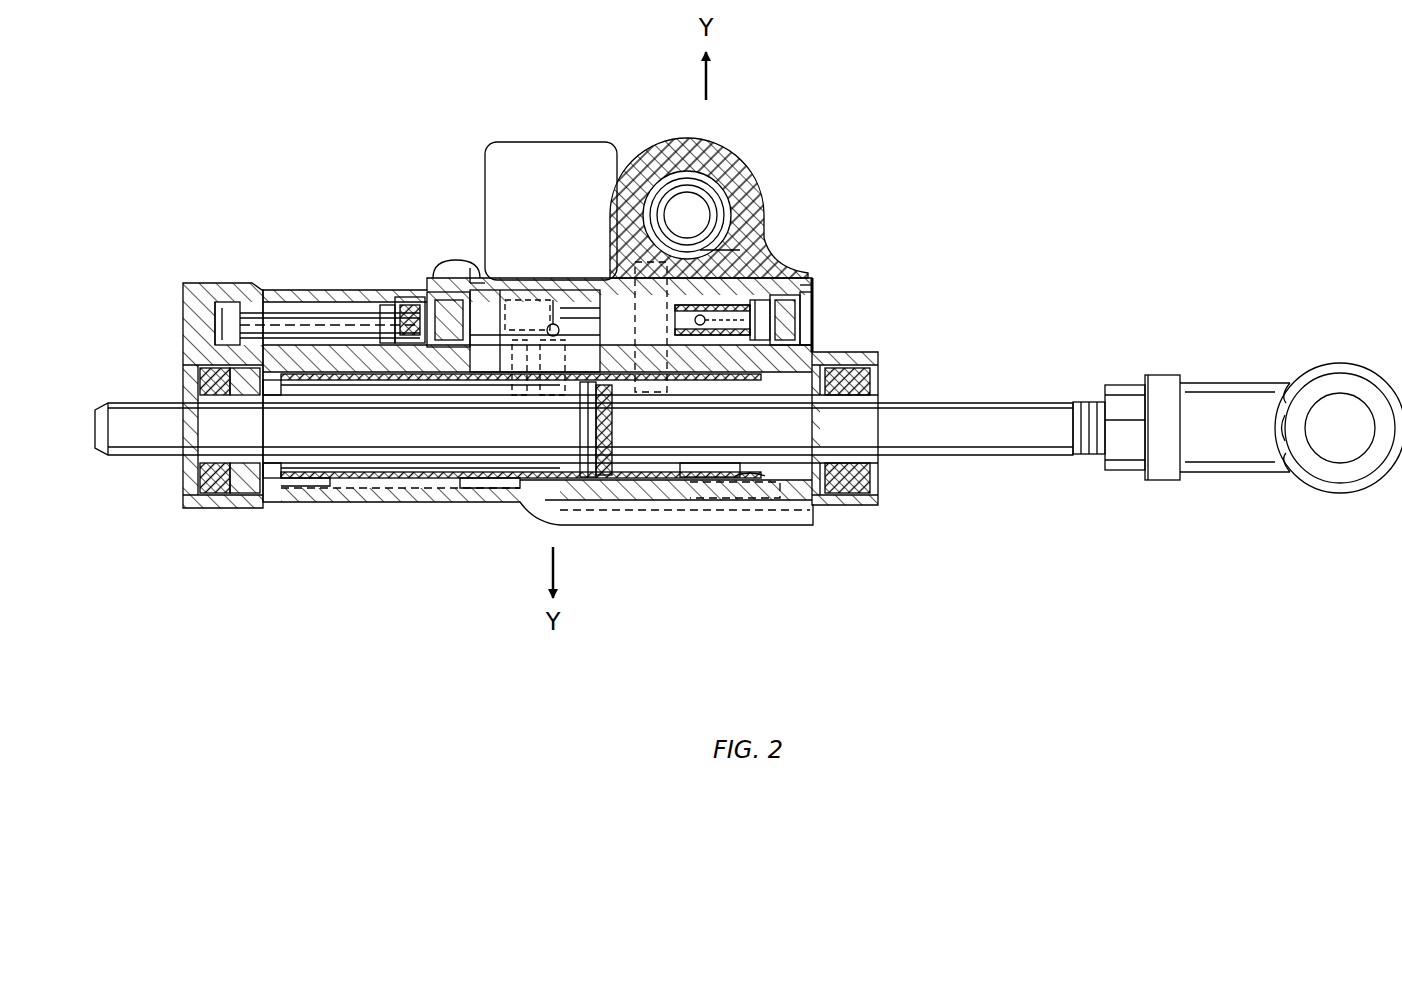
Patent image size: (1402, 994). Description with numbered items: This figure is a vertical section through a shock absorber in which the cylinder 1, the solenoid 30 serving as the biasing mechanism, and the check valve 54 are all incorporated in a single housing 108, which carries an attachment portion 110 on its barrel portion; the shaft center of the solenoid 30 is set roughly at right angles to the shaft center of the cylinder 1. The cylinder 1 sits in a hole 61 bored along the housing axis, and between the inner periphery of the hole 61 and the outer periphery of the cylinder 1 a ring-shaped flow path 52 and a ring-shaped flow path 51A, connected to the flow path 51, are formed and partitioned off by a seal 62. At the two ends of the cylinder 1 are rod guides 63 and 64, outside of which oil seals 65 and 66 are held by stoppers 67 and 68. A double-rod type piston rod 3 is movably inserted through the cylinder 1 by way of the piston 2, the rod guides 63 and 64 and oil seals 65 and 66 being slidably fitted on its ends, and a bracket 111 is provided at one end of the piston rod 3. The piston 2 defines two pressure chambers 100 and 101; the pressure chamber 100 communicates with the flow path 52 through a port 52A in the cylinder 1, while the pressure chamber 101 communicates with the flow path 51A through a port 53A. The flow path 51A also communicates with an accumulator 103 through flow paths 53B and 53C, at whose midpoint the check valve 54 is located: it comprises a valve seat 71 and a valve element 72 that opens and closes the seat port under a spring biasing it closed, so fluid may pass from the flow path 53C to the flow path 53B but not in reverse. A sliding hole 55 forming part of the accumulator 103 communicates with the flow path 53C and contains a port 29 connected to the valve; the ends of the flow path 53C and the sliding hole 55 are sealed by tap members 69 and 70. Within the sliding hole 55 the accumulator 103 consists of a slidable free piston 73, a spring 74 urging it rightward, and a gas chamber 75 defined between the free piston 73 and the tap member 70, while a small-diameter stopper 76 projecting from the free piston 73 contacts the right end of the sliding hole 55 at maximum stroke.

The cylinder 1 is at (382, 492).
The piston 2 is at (665, 490).
The piston rod 3 is at (1003, 440).
The port 29 is at (553, 320).
The solenoid 30 is at (580, 138).
The flow path 51 is at (727, 500).
The ring-shaped flow path 51A is at (740, 482).
The ring-shaped flow path 52 is at (488, 478).
The port 52A is at (306, 478).
The port 53A is at (812, 348).
The flow path 53B is at (825, 312).
The flow path 53C is at (725, 245).
The check valve 54 is at (758, 290).
The sliding hole 55 is at (490, 318).
The hole 61 is at (328, 322).
The seal 62 is at (648, 488).
The rod guide 63 is at (258, 470).
The rod guide 64 is at (879, 362).
The oil seal 65 is at (230, 506).
The oil seal 66 is at (879, 390).
The stopper 67 is at (198, 506).
The stopper 68 is at (856, 505).
The tap member 69 is at (815, 298).
The tap member 70 is at (183, 328).
The valve seat 71 is at (745, 272).
The valve element 72 is at (770, 305).
The free piston 73 is at (397, 300).
The spring 74 is at (290, 318).
The gas chamber 75 is at (257, 300).
The small-diameter stopper 76 is at (437, 268).
The pressure chamber 100 is at (432, 462).
The pressure chamber 101 is at (705, 480).
The accumulator 103 is at (383, 308).
The housing 108 is at (407, 490).
The attachment portion 110 is at (733, 150).
The bracket 111 is at (1338, 493).